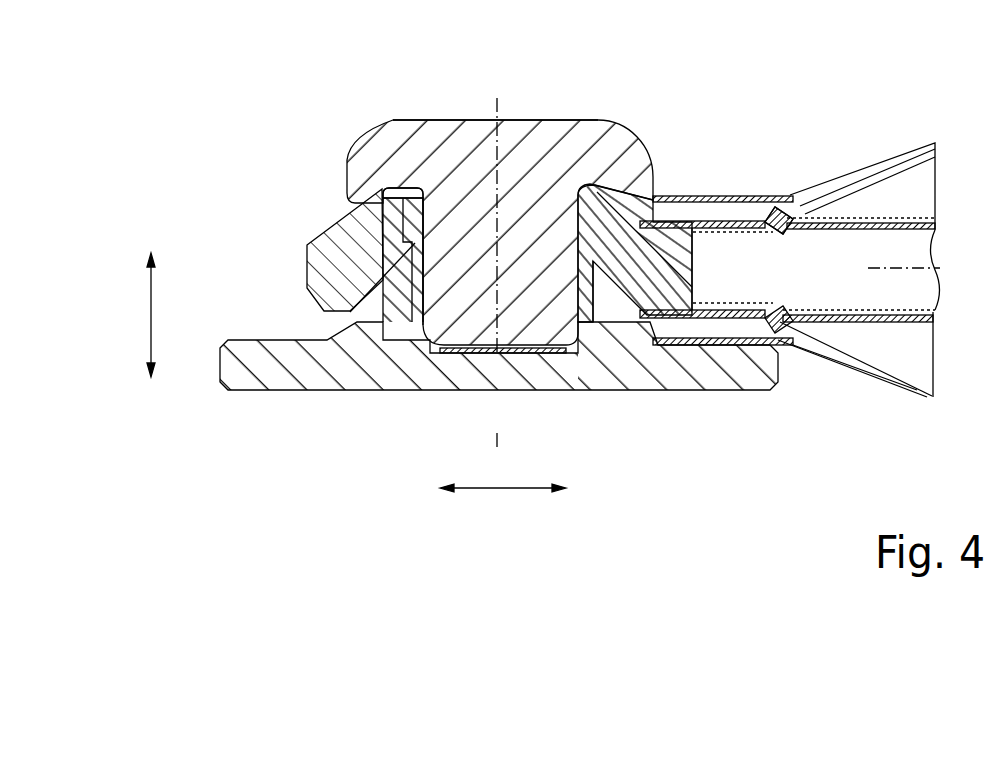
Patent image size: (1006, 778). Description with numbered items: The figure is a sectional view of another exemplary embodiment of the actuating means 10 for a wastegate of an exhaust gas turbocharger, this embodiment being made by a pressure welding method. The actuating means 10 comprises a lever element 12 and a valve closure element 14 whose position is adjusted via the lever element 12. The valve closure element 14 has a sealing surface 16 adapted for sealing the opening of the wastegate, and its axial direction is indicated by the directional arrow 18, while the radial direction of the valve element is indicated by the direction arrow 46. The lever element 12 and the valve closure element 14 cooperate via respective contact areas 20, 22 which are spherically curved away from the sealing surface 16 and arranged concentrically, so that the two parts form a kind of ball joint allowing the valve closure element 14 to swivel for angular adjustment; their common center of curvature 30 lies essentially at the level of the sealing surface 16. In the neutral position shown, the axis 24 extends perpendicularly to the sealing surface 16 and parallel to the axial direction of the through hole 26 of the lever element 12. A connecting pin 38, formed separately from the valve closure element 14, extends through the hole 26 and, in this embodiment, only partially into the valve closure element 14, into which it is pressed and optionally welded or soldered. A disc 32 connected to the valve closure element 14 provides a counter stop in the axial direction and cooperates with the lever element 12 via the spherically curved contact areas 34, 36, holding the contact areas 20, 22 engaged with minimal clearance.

The actuating means 10 is at (790, 286).
The lever element 12 is at (848, 210).
The valve closure element 14 is at (297, 367).
The sealing surface 16 is at (667, 390).
The directional arrow 18 is at (152, 308).
The contact area 20 is at (674, 319).
The contact area 22 is at (627, 290).
The axis 24 is at (540, 118).
The through hole 26 is at (598, 197).
The center of curvature 30 is at (493, 387).
The disc 32 is at (347, 220).
The contact area 34 is at (416, 308).
The contact area 36 is at (380, 197).
The connecting pin 38 is at (433, 137).
The direction arrow 46 is at (498, 488).